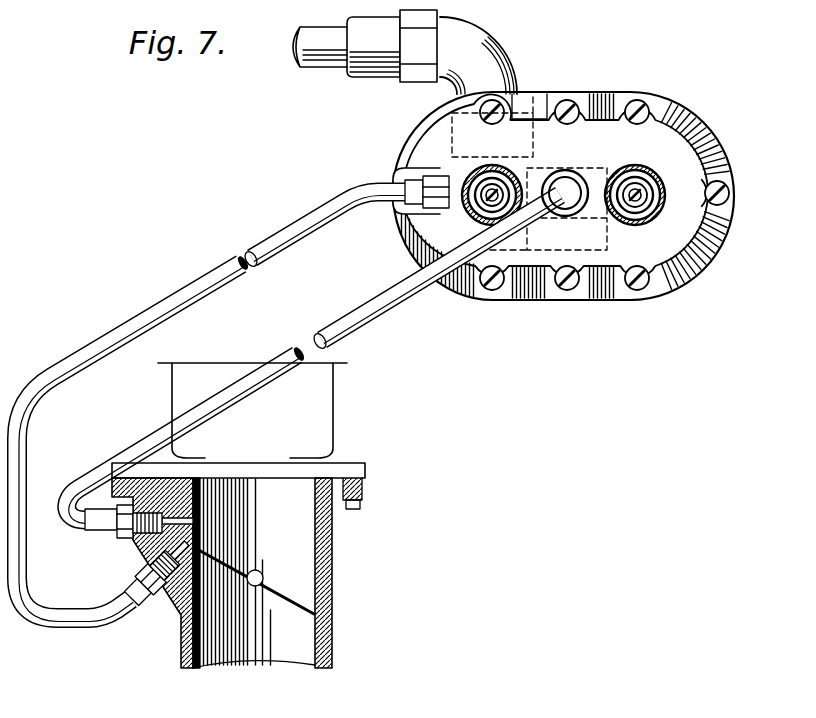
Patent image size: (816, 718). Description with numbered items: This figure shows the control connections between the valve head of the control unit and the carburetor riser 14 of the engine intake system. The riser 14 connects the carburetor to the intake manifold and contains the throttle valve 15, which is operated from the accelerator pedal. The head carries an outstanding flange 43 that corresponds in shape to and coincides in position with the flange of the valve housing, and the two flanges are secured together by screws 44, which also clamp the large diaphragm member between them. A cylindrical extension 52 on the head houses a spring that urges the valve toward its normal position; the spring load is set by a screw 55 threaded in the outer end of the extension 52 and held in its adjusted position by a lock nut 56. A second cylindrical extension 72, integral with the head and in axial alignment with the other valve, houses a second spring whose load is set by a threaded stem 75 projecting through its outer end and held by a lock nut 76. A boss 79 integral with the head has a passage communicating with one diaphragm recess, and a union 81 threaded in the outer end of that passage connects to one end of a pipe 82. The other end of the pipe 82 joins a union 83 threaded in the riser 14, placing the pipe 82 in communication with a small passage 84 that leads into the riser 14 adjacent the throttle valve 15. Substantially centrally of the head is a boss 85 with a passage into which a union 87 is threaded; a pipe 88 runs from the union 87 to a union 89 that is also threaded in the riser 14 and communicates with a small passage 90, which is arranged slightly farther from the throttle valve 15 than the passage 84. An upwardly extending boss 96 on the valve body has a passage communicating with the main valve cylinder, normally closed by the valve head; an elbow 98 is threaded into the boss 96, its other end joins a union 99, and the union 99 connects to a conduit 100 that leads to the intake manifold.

The riser 14 is at (333, 568).
The throttle valve 15 is at (284, 592).
The outstanding flange 43 is at (676, 103).
The screws 44 is at (571, 101).
The cylindrical extension 52 is at (619, 222).
The screw 55 is at (647, 196).
The lock nut 56 is at (643, 181).
The cylindrical extension 72 is at (474, 220).
The threaded stem 75 is at (490, 190).
The lock nut 76 is at (496, 185).
The boss 79 is at (438, 171).
The union 81 is at (413, 185).
The pipe 82 is at (285, 229).
The union 83 is at (136, 612).
The small passage 84 is at (195, 541).
The boss 85 is at (556, 216).
The union 87 is at (568, 176).
The pipe 88 is at (335, 320).
The union 89 is at (102, 537).
The small passage 90 is at (195, 521).
The boss 96 is at (445, 130).
The elbow 98 is at (505, 76).
The union 99 is at (415, 82).
The conduit 100 is at (320, 70).